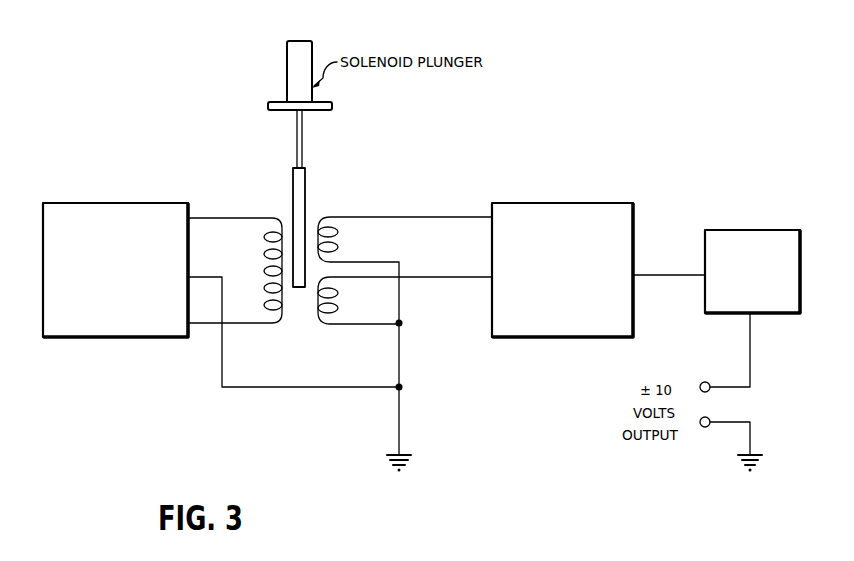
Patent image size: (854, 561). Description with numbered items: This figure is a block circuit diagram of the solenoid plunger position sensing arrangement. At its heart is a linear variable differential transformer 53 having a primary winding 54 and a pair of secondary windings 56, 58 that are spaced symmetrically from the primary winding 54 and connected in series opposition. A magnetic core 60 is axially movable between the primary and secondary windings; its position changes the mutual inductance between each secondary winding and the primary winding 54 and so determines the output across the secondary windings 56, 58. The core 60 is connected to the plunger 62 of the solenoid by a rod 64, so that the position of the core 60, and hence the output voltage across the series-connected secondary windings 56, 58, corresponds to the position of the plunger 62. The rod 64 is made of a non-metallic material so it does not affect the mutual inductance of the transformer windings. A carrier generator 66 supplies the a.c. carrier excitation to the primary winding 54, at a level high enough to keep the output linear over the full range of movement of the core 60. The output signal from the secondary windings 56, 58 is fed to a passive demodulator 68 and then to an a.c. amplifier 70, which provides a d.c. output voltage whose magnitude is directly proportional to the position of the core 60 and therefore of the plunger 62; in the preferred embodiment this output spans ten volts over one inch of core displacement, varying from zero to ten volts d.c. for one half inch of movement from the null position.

The linear variable differential transformer 53 is at (310, 391).
The primary winding 54 is at (278, 306).
The secondary winding 56 is at (337, 232).
The secondary winding 58 is at (330, 308).
The magnetic core 60 is at (299, 197).
The plunger 62 is at (289, 60).
The rod 64 is at (297, 137).
The carrier generator 66 is at (75, 217).
The passive demodulator 68 is at (552, 217).
The a.c. amplifier 70 is at (733, 240).